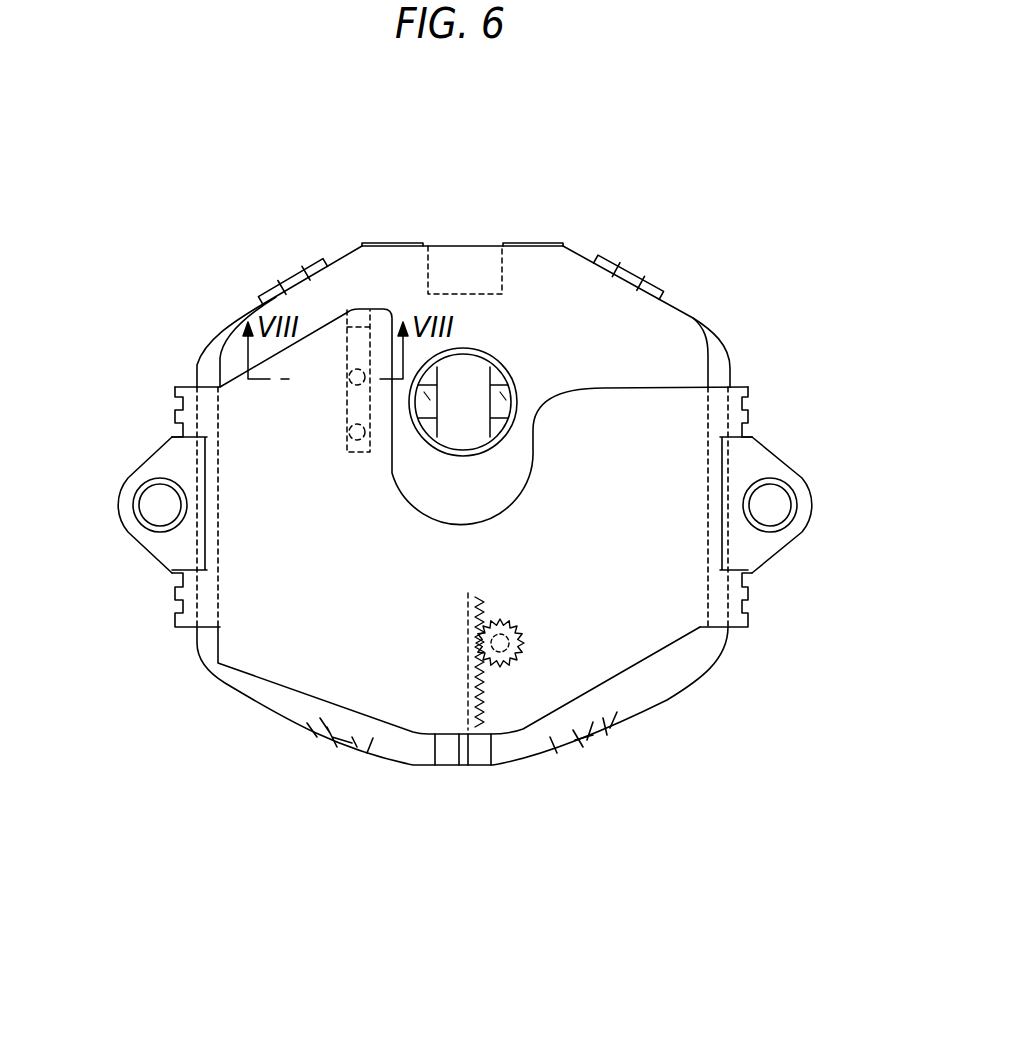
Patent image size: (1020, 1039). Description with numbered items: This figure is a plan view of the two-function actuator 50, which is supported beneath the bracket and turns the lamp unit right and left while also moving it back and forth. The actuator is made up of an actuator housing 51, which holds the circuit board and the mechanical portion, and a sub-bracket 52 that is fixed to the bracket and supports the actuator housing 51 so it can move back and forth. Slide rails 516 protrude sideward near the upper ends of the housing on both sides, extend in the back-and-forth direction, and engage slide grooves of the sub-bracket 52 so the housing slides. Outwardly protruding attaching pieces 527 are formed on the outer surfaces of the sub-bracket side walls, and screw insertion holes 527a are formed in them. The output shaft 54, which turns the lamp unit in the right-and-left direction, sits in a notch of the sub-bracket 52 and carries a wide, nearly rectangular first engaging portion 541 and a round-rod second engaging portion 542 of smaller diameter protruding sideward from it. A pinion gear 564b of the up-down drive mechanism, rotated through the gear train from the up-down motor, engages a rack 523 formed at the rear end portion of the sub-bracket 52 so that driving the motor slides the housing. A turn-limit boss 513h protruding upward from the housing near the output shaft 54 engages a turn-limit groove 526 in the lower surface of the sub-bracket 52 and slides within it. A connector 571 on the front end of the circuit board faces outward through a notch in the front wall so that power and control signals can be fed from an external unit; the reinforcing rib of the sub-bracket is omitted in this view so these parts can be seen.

The two-function actuator 50 is at (696, 213).
The actuator housing 51 is at (651, 693).
The sub-bracket 52 is at (643, 617).
The output shaft 54 is at (463, 373).
The slide rails 516 is at (207, 372).
The rack 523 is at (490, 690).
The turn-limit groove 526 is at (347, 453).
The attaching pieces 527 is at (143, 545).
The screw insertion holes 527a is at (158, 486).
The first engaging portion 541 is at (477, 373).
The second engaging portion 542 is at (503, 397).
The turn-limit boss 513h is at (348, 410).
The pinion gear 564b is at (528, 638).
The connector 571 is at (488, 256).